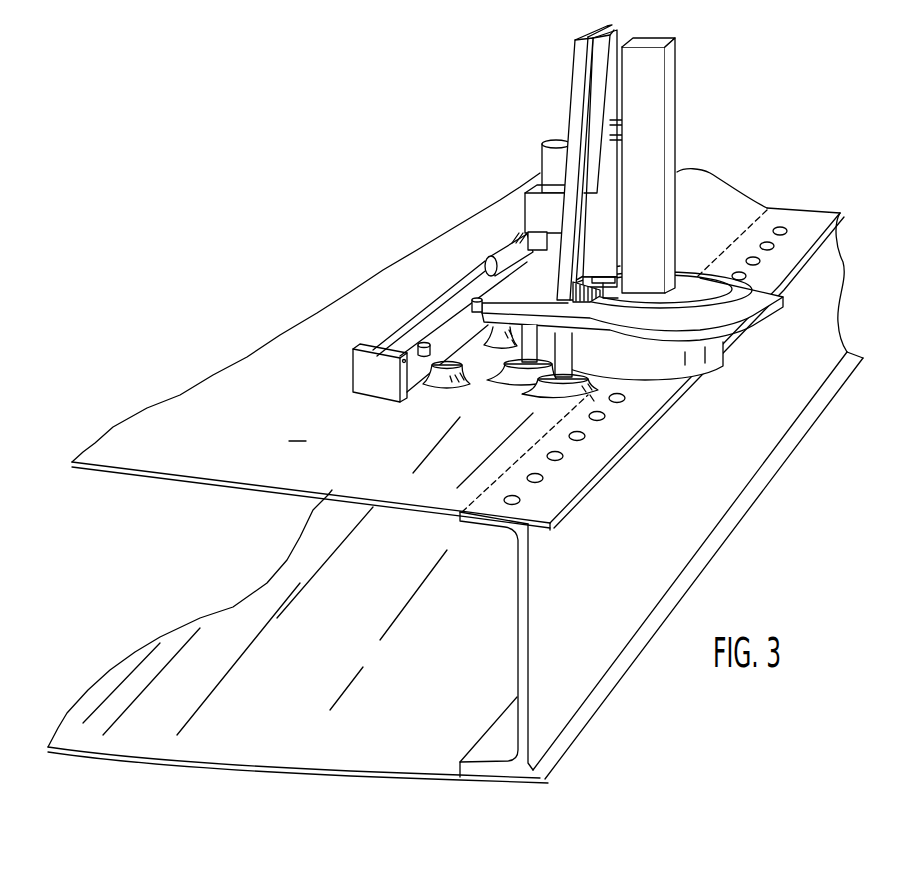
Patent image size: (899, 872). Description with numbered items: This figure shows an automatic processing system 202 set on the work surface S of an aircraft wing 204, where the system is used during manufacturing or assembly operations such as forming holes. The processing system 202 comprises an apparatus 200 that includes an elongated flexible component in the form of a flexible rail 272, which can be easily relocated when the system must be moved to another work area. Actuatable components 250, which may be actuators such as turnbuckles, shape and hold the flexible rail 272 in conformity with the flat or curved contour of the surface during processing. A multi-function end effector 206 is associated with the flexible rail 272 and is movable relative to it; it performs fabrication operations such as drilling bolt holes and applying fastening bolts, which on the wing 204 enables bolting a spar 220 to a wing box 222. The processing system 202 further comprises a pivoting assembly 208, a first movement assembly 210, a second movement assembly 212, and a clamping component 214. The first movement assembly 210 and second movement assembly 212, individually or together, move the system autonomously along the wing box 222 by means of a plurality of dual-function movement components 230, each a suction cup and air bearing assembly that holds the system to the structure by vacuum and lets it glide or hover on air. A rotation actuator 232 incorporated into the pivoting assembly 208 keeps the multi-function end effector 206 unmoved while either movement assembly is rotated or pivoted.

The apparatus 200 is at (406, 319).
The automatic processing system 202 is at (554, 121).
The aircraft wing 204 is at (61, 453).
The multi-function end effector 206 is at (687, 128).
The pivoting assembly 208 is at (690, 293).
The first movement assembly 210 is at (505, 316).
The second movement assembly 212 is at (632, 333).
The clamping component 214 is at (710, 355).
The spar 220 is at (557, 683).
The wing box 222 is at (205, 458).
The dual-function movement component 230 is at (592, 393).
The rotation actuator 232 is at (537, 212).
The actuatable components 250 is at (456, 283).
The flexible rail 272 is at (417, 370).